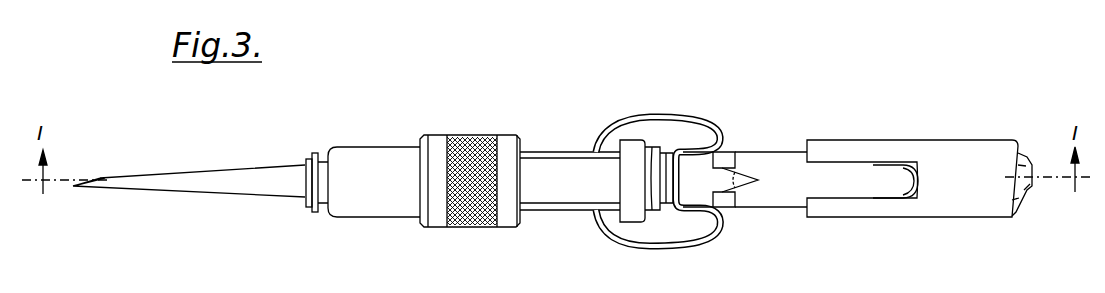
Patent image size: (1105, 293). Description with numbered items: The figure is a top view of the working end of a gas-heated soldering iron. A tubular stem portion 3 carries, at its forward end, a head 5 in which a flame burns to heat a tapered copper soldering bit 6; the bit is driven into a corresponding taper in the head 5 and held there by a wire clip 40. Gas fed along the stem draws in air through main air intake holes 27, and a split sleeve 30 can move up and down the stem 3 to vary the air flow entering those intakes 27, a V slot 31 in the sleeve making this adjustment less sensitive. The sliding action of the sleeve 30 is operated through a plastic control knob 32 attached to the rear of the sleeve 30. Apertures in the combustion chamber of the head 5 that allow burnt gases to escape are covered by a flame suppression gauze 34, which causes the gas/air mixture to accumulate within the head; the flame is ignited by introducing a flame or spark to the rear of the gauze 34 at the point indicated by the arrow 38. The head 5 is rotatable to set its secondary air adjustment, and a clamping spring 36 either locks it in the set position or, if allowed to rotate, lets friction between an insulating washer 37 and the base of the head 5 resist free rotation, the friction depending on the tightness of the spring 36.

The tubular stem portion 3 is at (1028, 160).
The head 5 is at (416, 141).
The soldering bit 6 is at (194, 173).
The main air intake holes 27 is at (736, 172).
The split sleeve 30 is at (797, 151).
The V slot 31 is at (722, 166).
The plastic control knob 32 is at (893, 191).
The flame suppression gauze 34 is at (470, 150).
The spring 36 is at (648, 116).
The insulating washer 37 is at (656, 150).
The arrow 38 is at (528, 146).
The wire clip 40 is at (314, 212).